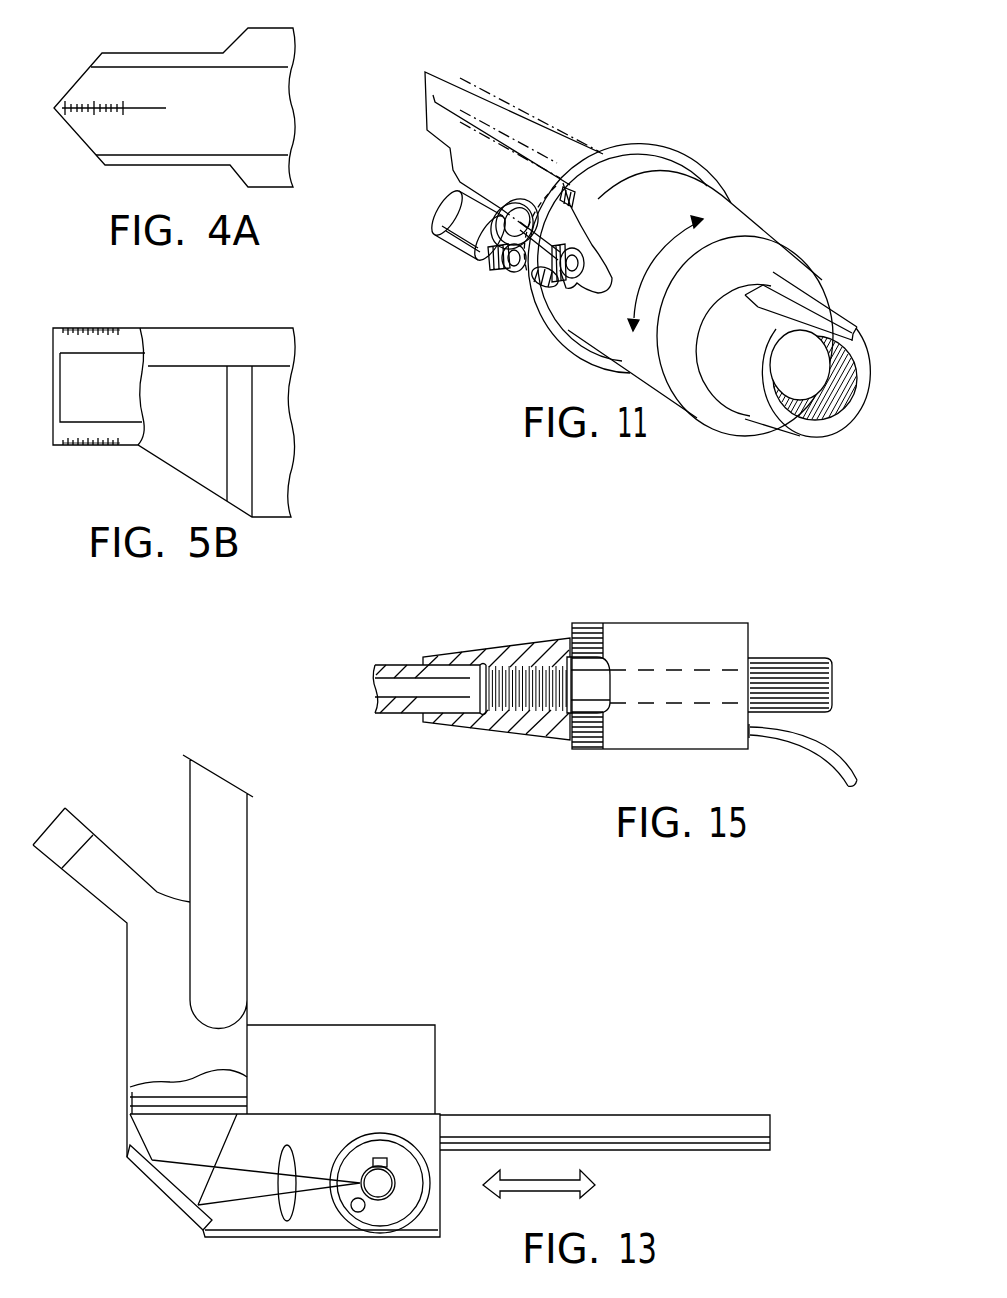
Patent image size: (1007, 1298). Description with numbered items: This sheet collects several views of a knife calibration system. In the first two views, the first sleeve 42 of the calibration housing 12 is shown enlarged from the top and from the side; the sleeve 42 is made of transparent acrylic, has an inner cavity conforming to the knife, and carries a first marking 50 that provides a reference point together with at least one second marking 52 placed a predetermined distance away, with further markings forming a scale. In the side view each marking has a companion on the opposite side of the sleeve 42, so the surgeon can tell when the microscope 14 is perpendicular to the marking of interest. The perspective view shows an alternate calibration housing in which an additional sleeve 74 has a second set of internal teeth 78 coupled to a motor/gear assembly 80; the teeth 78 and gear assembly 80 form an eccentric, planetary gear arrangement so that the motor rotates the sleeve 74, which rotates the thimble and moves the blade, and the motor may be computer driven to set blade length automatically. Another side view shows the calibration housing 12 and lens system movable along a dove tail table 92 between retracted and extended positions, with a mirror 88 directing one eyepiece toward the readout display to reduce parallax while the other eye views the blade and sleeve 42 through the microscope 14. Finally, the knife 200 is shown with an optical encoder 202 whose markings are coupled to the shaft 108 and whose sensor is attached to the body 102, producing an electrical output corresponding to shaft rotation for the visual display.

In FIG. 4A, the first sleeve 42 is at (291, 45).
In FIG. 5B, the first sleeve 42 is at (260, 341).
In FIG. 4A, the first marking 50 is at (123, 105).
In FIG. 5B, the first marking 50 is at (120, 328).
In FIG. 4A, the second marking 52 is at (90, 102).
In FIG. 5B, the second marking 52 is at (83, 328).
In FIG. 11, the additional sleeve 74 is at (717, 205).
In FIG. 11, the second set of internal teeth 78 is at (543, 282).
In FIG. 11, the motor/gear assembly 80 is at (468, 264).
In FIG. 15, the knife 200 is at (535, 627).
In FIG. 15, the optical encoder 202 is at (673, 637).
In FIG. 15, the body 102 is at (483, 723).
In FIG. 15, the first shaft 108 is at (587, 687).
In FIG. 13, the microscope 14 is at (137, 1004).
In FIG. 13, the calibration housing 12 is at (407, 1137).
In FIG. 13, the dove tail table 92 is at (612, 1125).
In FIG. 13, the mirror 88 is at (238, 1205).